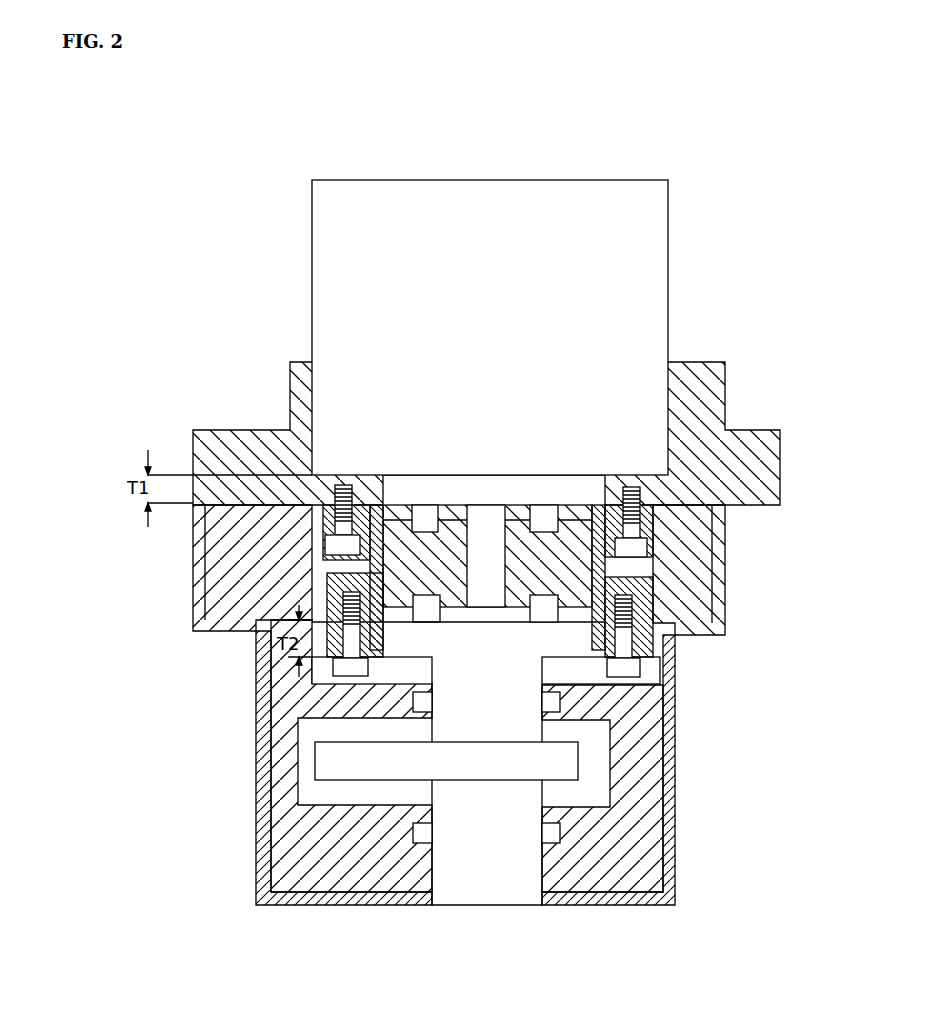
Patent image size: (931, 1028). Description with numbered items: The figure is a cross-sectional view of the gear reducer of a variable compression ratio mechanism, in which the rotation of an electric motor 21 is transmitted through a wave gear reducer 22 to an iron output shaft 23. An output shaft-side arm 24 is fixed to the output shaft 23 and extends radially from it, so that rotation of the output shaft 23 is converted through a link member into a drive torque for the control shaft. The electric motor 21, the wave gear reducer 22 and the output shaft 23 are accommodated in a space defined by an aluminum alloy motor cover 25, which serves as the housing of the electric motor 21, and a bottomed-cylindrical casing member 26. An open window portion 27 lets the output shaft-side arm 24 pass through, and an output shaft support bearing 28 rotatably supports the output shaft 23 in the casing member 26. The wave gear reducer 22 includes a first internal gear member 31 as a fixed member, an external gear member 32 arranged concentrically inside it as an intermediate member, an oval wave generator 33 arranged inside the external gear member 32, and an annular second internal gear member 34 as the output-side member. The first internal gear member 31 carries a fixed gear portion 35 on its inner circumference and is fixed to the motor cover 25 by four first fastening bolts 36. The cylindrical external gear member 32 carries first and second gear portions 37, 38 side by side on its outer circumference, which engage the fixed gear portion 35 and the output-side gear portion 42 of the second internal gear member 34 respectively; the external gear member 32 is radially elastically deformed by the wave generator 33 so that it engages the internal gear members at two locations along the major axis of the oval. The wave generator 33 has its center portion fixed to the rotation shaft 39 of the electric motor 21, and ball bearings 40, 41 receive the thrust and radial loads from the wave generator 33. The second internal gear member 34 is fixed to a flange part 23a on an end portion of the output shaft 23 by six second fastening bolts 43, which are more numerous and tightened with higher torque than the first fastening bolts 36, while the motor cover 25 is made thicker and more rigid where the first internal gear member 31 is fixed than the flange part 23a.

The electric motor 21 is at (303, 214).
The wave gear reducer 22 is at (278, 524).
The output shaft 23 is at (512, 893).
The flange part 23a is at (322, 668).
The output shaft-side arm 24 is at (326, 768).
The motor cover 25 is at (713, 395).
The casing member 26 is at (262, 878).
The open window portion 27 is at (300, 738).
The output shaft support bearing 28 is at (412, 700).
The first internal gear member 31 is at (647, 513).
The external gear member 32 is at (377, 563).
The wave generator 33 is at (400, 520).
The second internal gear member 34 is at (647, 583).
The fixed gear portion 35 is at (335, 522).
The first fastening bolts 36 is at (645, 530).
The first gear portion 37 is at (640, 550).
The second gear portion 38 is at (640, 607).
The rotation shaft 39 is at (485, 520).
The ball bearing 40 is at (555, 525).
The ball bearing 41 is at (546, 620).
The output-side gear portion 42 is at (350, 587).
The second fastening bolts 43 is at (630, 666).